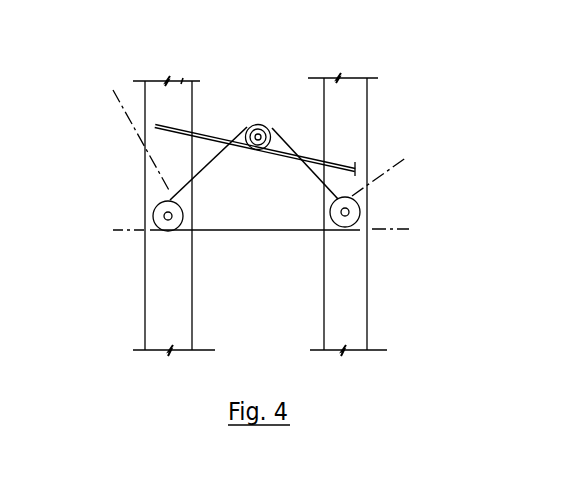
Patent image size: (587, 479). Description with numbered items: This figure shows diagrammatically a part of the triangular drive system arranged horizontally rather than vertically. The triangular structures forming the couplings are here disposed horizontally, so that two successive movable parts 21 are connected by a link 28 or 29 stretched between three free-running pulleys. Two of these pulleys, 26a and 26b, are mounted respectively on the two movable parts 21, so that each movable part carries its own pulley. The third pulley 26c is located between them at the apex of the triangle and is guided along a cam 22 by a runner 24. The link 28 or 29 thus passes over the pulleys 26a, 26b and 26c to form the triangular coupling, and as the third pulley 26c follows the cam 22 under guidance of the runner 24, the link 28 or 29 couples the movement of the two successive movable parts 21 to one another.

The movable part 21 is at (162, 103).
The cam 22 is at (206, 137).
The runner 24 is at (258, 129).
The free-running pulley 26a is at (153, 219).
The free-running pulley 26b is at (357, 208).
The free-running pulley 26c is at (267, 128).
The link 28 is at (210, 233).
The link 29 is at (380, 229).